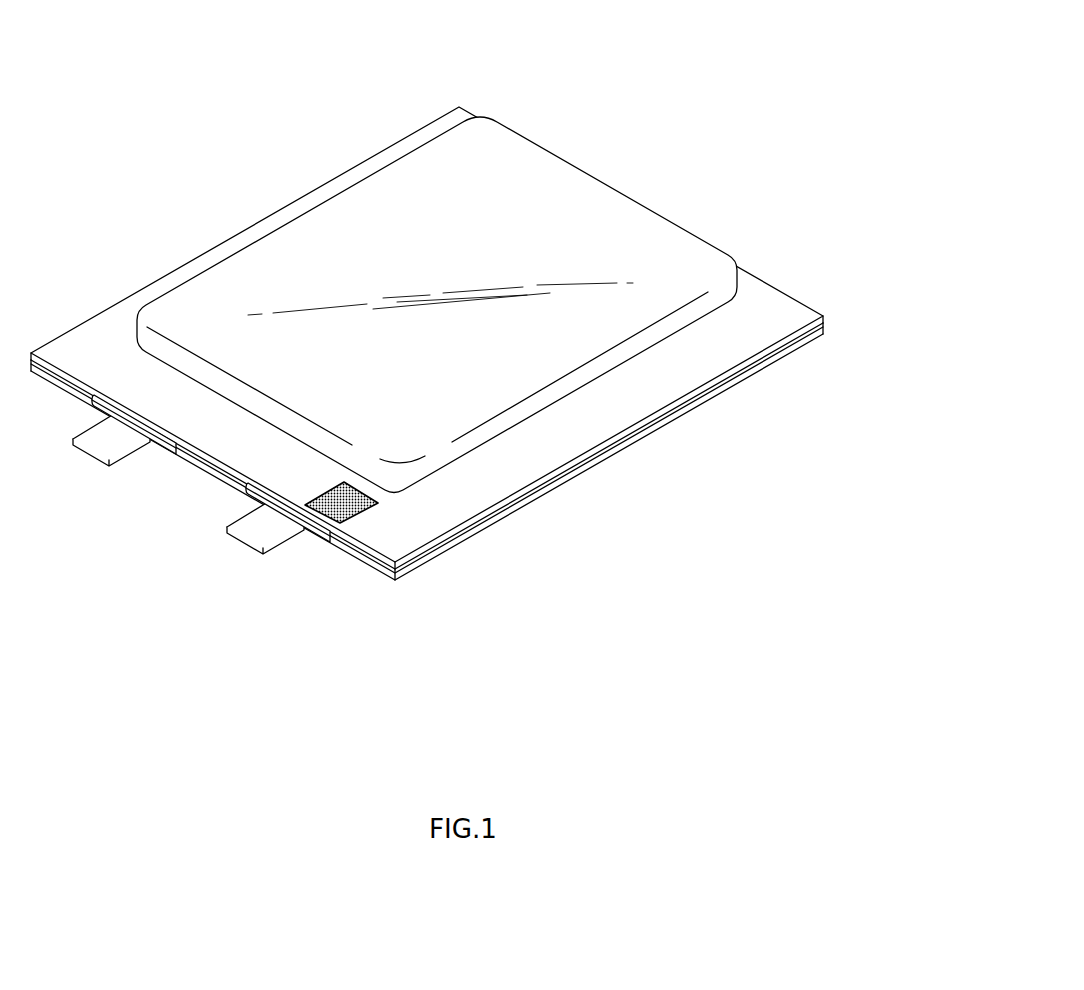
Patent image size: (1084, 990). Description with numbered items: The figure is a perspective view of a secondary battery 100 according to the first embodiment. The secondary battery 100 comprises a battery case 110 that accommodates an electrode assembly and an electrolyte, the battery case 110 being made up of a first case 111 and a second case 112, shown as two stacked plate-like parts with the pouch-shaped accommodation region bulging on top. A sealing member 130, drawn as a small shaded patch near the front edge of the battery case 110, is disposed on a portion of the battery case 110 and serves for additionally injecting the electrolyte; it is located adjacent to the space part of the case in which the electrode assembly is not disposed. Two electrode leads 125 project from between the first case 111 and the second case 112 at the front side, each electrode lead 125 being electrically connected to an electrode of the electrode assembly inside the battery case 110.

The secondary battery 100 is at (489, 340).
The battery case 110 is at (489, 343).
The first case 111 is at (805, 308).
The second case 112 is at (805, 346).
The electrode lead 125 is at (242, 544).
The sealing member 130 is at (352, 505).